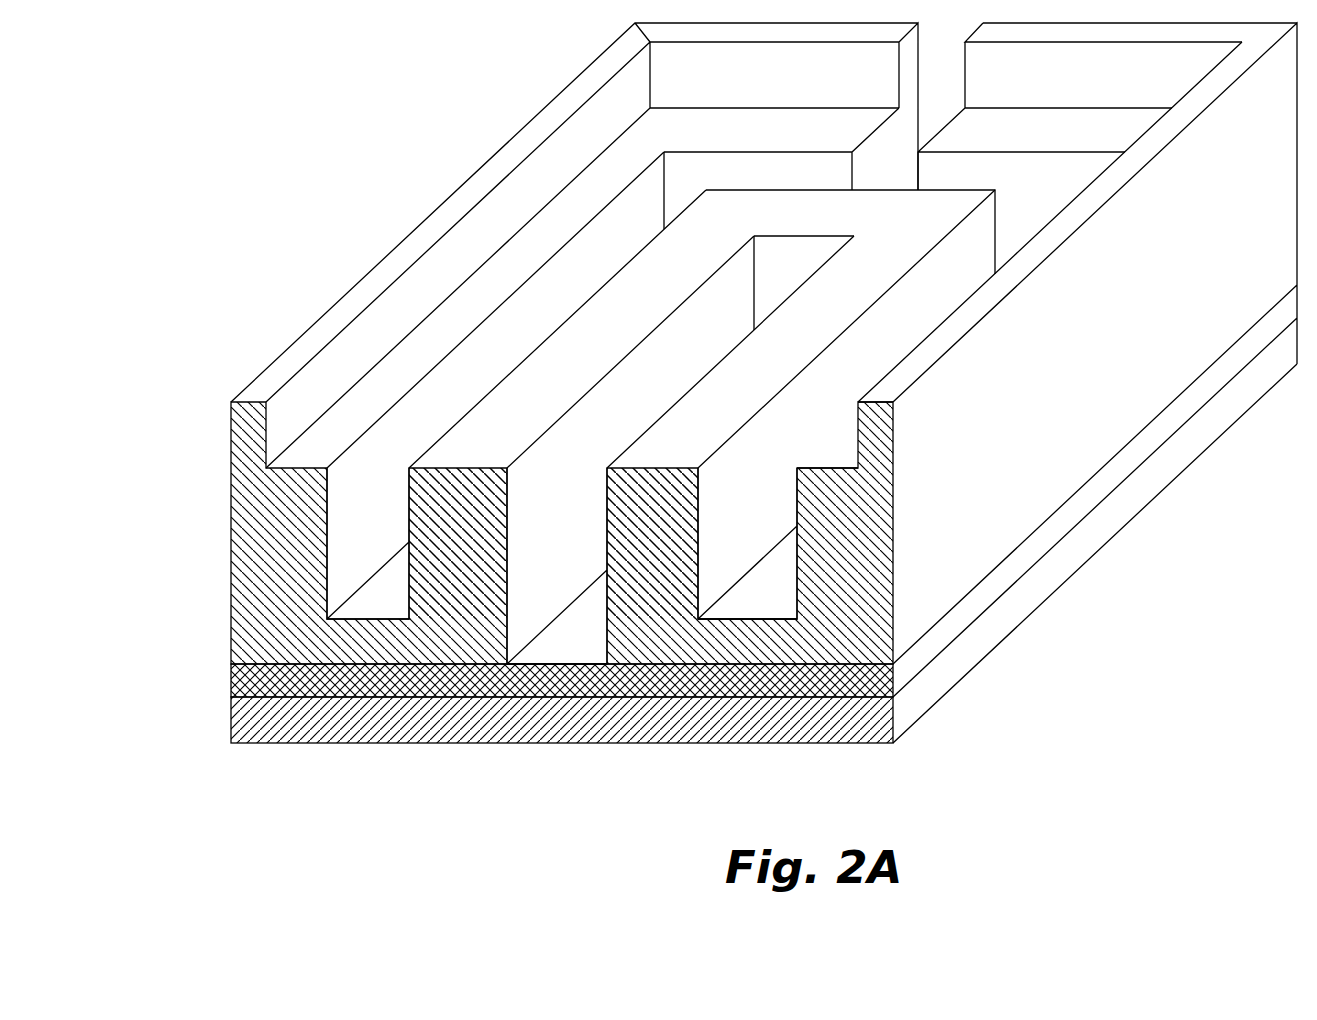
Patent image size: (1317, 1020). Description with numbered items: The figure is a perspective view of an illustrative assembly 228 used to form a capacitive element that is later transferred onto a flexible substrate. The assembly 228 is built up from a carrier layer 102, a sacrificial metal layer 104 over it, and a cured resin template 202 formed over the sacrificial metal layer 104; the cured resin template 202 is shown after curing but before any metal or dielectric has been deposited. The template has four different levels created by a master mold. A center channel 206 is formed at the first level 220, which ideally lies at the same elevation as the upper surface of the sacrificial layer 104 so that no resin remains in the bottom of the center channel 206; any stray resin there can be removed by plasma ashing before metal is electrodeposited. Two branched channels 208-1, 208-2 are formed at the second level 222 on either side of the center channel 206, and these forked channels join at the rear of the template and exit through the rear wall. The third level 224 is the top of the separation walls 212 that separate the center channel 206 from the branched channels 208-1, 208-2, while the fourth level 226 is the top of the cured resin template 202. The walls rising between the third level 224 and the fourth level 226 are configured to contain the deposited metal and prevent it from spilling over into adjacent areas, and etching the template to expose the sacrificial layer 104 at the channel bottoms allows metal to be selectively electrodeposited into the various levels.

The assembly 228 is at (350, 136).
The cured resin template 202 is at (200, 402).
The branched channel 208-1 is at (377, 485).
The center channel 206 is at (575, 488).
The branched channel 208-2 is at (757, 488).
The separation walls 212 is at (487, 567).
The sacrificial metal layer 104 is at (459, 691).
The carrier layer 102 is at (459, 732).
The level 4 226 is at (893, 403).
The level 3 224 is at (858, 469).
The level 2 222 is at (797, 620).
The level 1 220 is at (893, 665).